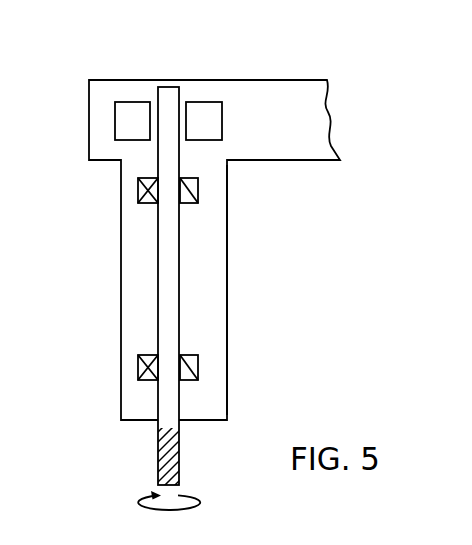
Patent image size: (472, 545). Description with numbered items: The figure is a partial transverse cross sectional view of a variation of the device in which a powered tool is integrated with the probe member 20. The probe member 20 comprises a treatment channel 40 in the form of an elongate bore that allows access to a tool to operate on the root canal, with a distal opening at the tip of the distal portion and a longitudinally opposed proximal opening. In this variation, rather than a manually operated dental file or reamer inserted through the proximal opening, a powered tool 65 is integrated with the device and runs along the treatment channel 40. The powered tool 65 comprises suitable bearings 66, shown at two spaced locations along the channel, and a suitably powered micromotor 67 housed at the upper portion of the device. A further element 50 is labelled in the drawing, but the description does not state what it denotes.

The probe member 20 is at (202, 275).
The treatment channel 40 is at (157, 241).
The head / flange 50 is at (296, 140).
The powered tool 65 is at (168, 307).
The bearings 66 is at (143, 190).
The micromotor 67 is at (133, 107).